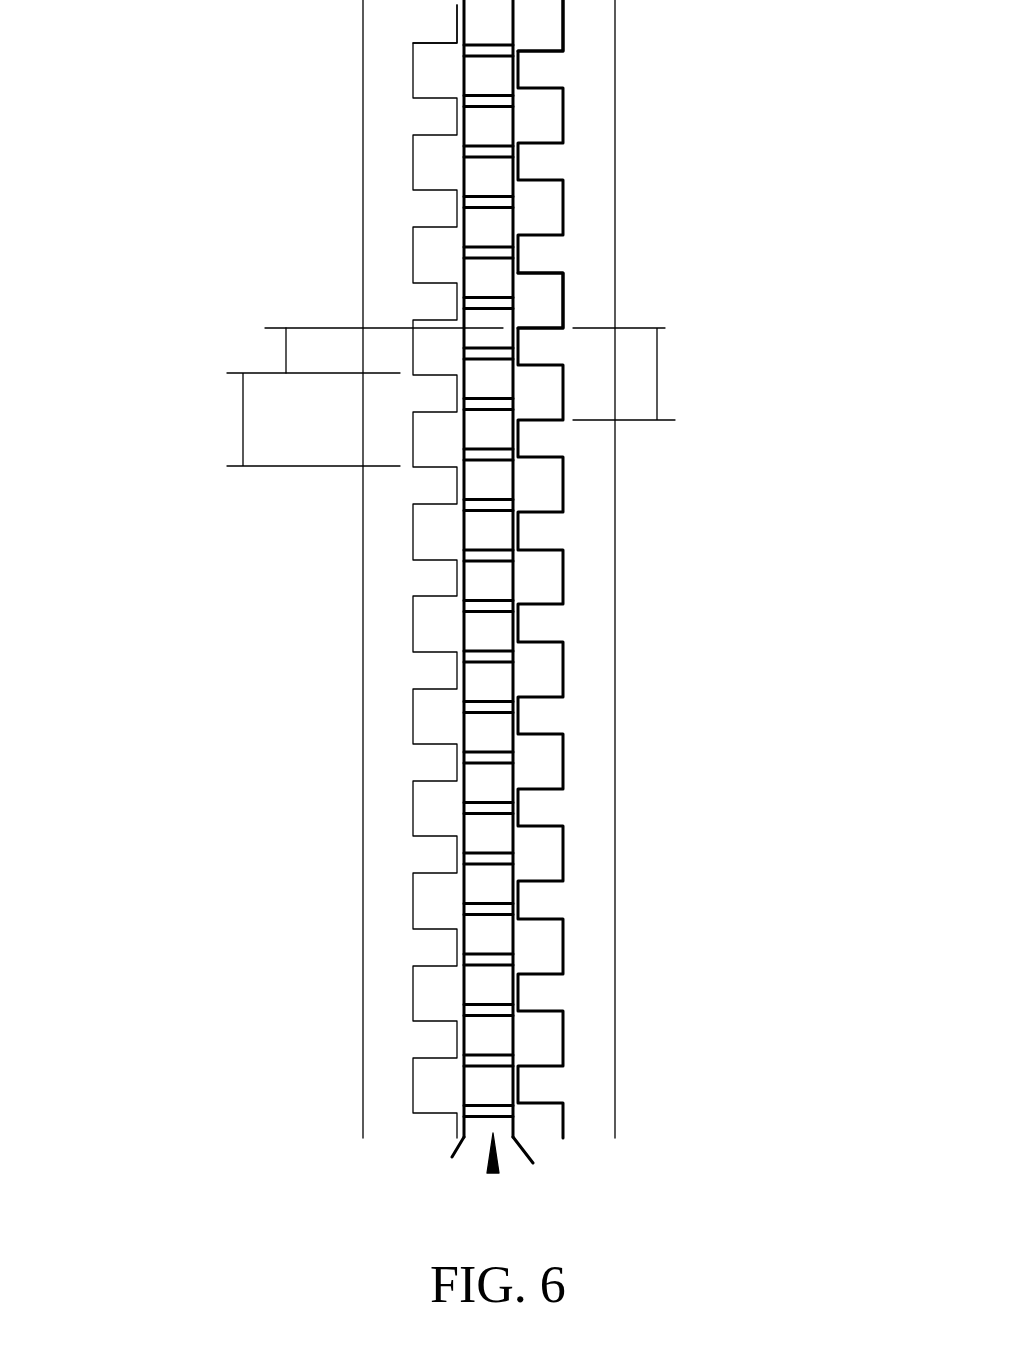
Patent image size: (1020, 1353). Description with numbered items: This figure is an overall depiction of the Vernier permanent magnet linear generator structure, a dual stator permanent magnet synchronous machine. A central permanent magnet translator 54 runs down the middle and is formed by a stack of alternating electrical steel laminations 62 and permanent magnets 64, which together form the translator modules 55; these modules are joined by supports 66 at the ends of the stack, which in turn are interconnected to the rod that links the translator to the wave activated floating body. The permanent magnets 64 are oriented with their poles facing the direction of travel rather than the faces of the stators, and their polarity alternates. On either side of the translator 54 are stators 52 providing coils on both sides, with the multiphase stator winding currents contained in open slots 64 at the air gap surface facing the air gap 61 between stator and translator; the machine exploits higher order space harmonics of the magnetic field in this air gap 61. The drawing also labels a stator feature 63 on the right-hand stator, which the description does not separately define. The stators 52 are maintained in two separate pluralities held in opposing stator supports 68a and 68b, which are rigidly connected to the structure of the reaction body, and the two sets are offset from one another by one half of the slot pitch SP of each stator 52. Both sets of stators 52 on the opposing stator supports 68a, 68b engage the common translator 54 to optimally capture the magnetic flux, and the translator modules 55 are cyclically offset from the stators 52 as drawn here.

The stator 52 is at (432, 112).
The air gap 61 is at (462, 103).
The electrical steel laminations 62 is at (495, 123).
The permanent magnets 64 is at (440, 255).
The translator modules 55 is at (525, 101).
The protrusion 63 is at (538, 287).
The supports 66 is at (452, 1157).
The stator support 68a is at (383, 656).
The stator support 68b is at (593, 585).
The translator 54 is at (495, 1173).
The slot pitch SP is at (243, 398).